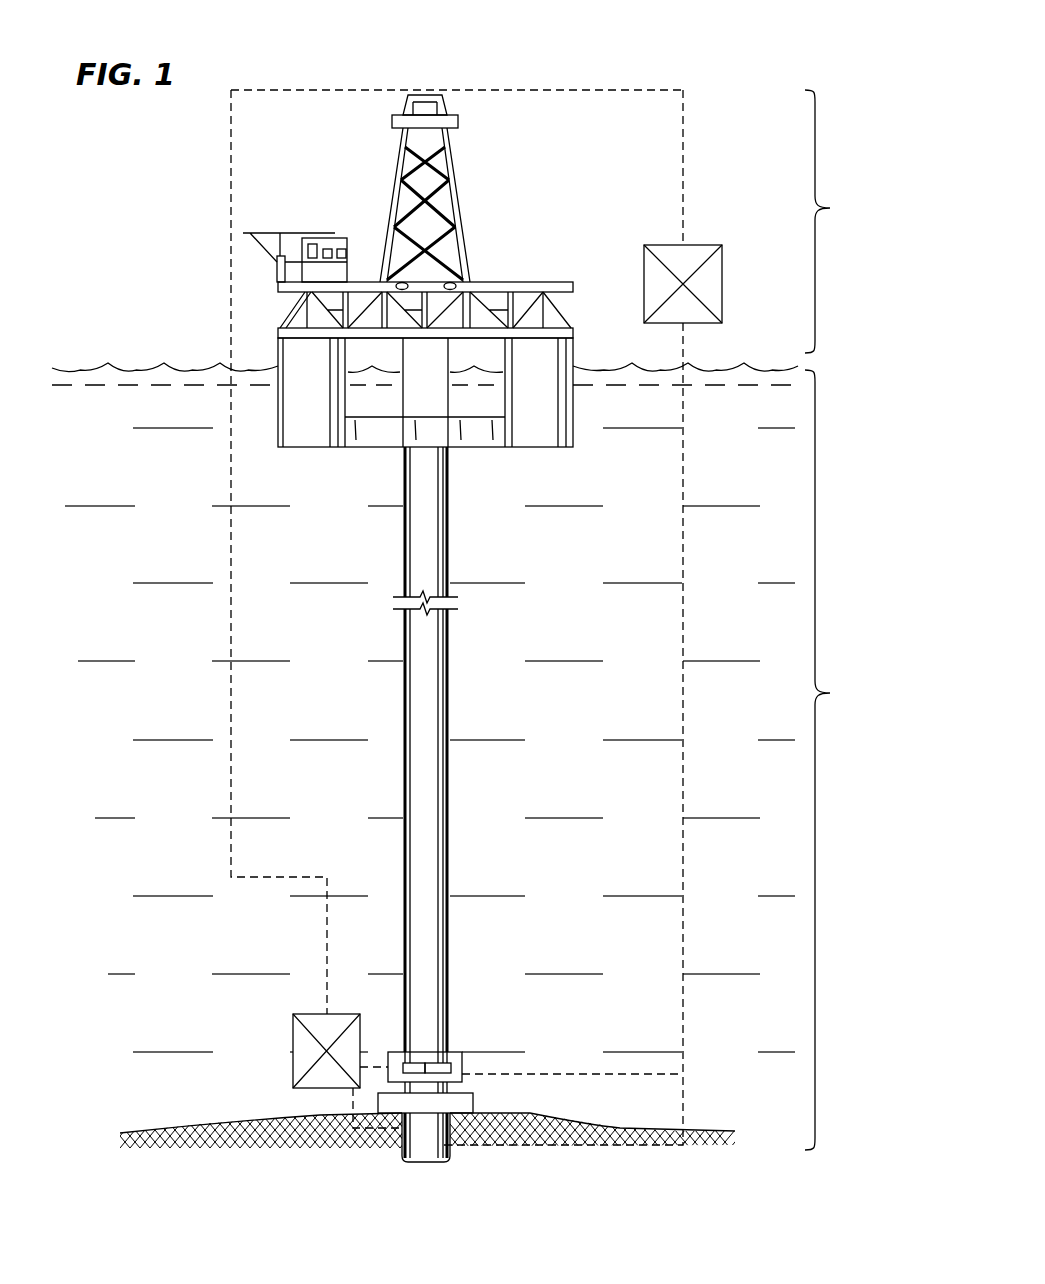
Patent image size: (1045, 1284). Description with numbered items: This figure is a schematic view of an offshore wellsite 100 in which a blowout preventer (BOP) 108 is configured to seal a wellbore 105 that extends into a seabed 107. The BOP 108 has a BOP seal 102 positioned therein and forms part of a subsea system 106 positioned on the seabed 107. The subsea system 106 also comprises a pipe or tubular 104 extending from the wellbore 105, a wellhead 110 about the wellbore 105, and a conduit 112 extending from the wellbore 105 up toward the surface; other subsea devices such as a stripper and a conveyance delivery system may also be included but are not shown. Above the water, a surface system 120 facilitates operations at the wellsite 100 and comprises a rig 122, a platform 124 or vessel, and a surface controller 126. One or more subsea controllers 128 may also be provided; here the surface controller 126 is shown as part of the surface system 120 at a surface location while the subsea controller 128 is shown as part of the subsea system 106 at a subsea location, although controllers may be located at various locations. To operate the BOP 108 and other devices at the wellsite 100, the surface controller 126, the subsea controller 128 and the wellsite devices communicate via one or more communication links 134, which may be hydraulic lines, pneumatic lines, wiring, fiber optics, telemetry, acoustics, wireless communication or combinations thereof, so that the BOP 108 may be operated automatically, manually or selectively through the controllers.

The offshore wellsite 100 is at (774, 54).
The BOP seal 102 is at (447, 1063).
The pipe 104 is at (395, 1140).
The wellbore 105 is at (450, 1160).
The subsea system 106 is at (831, 693).
The seabed 107 is at (188, 1125).
The blowout preventer (BOP) 108 is at (462, 1068).
The wellhead 110 is at (474, 1106).
The conduit 112 is at (448, 650).
The surface system 120 is at (831, 208).
The rig 122 is at (455, 167).
The platform 124 is at (278, 347).
The surface controller 126 is at (701, 245).
The subsea controller 128 is at (293, 1040).
The communication links 134 is at (231, 596).